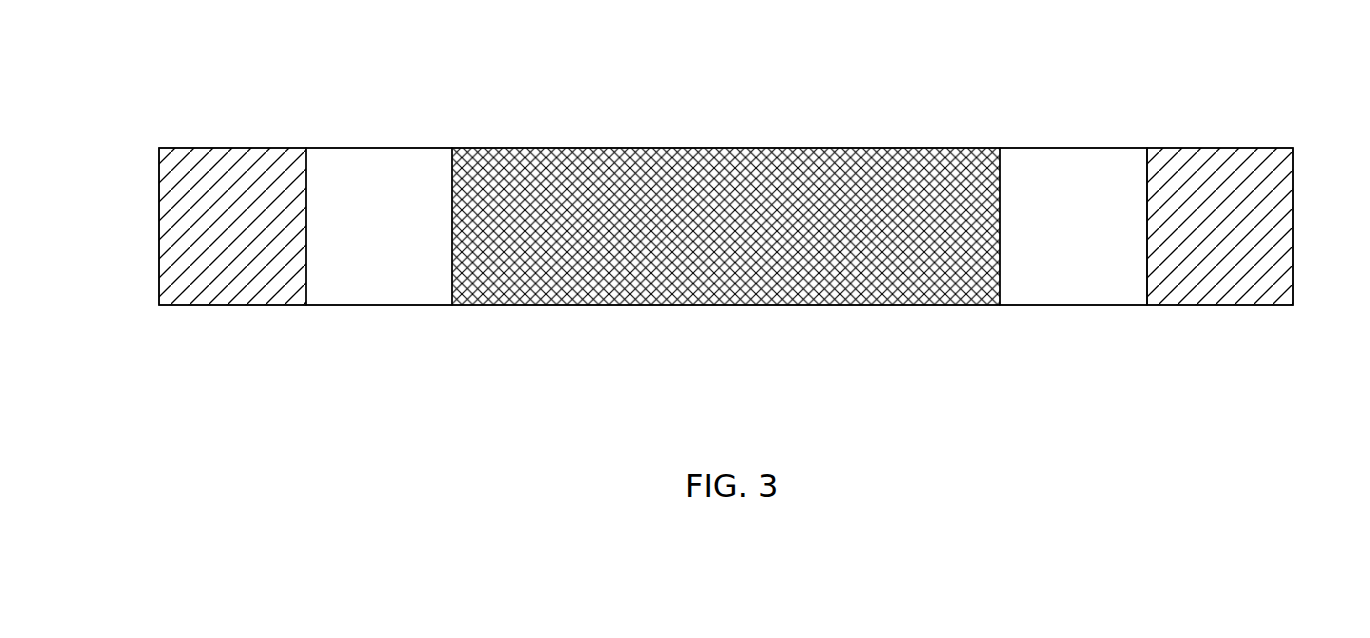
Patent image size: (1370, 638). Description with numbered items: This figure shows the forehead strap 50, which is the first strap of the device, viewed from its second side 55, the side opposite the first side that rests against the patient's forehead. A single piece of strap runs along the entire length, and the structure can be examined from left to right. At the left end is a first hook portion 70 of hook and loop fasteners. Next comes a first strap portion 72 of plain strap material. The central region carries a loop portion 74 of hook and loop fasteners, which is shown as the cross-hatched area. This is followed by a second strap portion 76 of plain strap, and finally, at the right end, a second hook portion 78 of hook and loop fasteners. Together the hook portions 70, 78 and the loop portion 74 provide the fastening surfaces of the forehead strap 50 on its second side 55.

The forehead strap 50 is at (112, 228).
The second side 55 is at (1324, 239).
The first hook portion 70 is at (232, 287).
The first strap portion 72 is at (368, 278).
The loop portion 74 is at (713, 287).
The second strap portion 76 is at (1065, 280).
The second hook portion 78 is at (1212, 290).